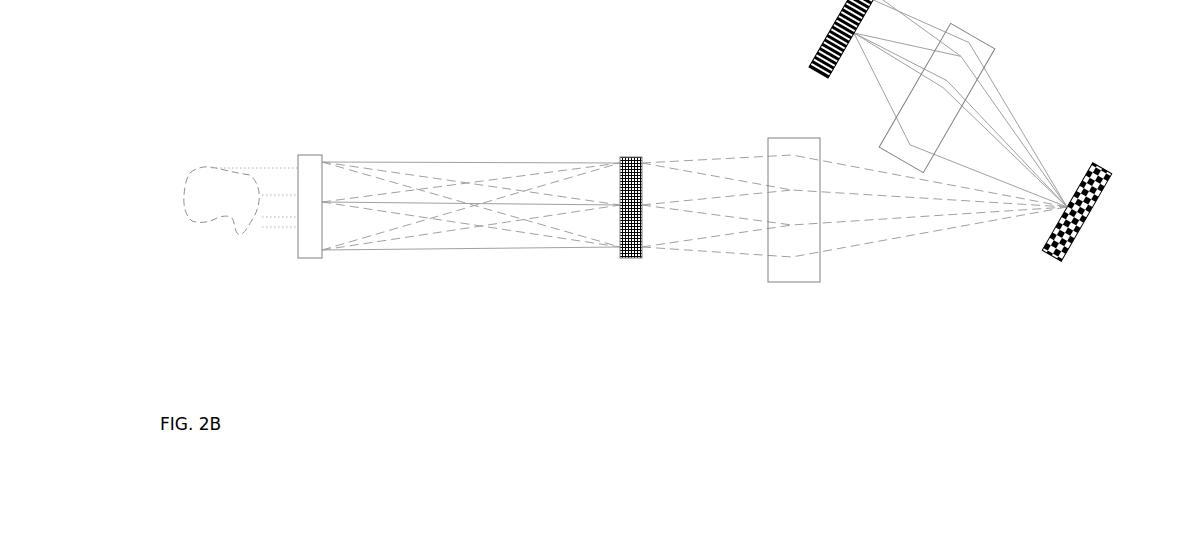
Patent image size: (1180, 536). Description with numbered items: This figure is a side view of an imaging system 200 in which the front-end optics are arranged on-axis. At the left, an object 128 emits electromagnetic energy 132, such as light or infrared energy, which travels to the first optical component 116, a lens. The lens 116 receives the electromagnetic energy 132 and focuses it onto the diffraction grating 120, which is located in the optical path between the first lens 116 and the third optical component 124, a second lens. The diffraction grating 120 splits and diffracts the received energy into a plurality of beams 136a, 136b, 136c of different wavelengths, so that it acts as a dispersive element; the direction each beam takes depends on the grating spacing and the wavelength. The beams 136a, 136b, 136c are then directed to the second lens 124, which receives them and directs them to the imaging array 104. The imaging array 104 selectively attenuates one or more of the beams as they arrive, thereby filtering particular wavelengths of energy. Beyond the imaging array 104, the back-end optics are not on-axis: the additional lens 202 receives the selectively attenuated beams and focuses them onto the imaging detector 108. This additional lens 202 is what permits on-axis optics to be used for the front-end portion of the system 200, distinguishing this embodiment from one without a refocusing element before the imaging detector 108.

The imaging array 104 is at (1103, 167).
The imaging detector 108 is at (815, 56).
The first optical component 116 is at (312, 155).
The diffraction grating 120 is at (628, 155).
The third optical component 124 is at (793, 138).
The object 128 is at (192, 173).
The electromagnetic energy 132 is at (263, 167).
The beam 136a is at (710, 159).
The beam 136b is at (713, 215).
The beam 136c is at (748, 255).
The imaging system 200 is at (270, 315).
The additional lens 202 is at (973, 38).